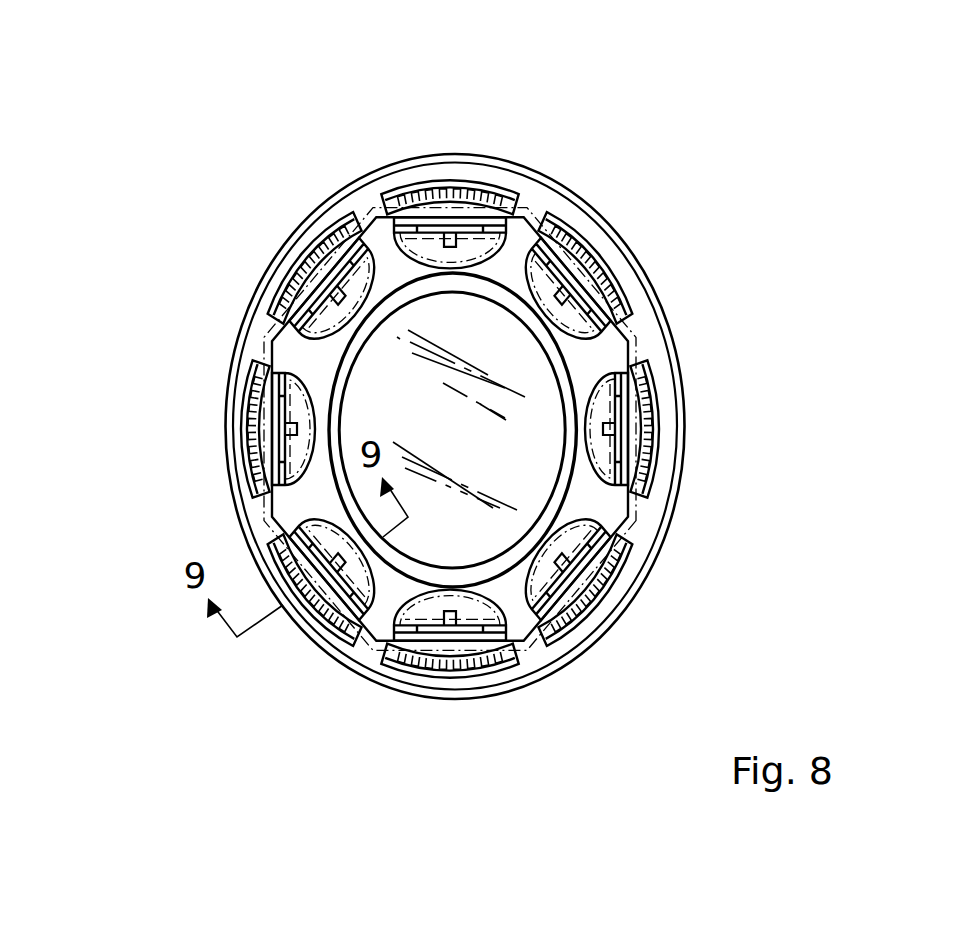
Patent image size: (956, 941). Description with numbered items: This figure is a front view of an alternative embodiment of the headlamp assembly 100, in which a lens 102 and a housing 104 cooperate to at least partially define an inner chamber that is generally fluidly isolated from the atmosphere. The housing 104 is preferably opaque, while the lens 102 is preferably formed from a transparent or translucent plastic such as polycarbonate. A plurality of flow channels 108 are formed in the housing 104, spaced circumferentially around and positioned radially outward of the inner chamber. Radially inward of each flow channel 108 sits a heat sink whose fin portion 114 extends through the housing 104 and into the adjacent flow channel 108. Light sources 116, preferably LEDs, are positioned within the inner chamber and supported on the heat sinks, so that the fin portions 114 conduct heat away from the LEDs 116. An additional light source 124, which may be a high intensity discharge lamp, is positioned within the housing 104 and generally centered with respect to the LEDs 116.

The headlamp assembly 100 is at (740, 154).
The lens 102 is at (527, 467).
The housing 104 is at (536, 192).
The flow channel 108 is at (310, 243).
The fin portion 114 is at (335, 300).
The light source 116 is at (283, 272).
The additional light source 124 is at (432, 444).